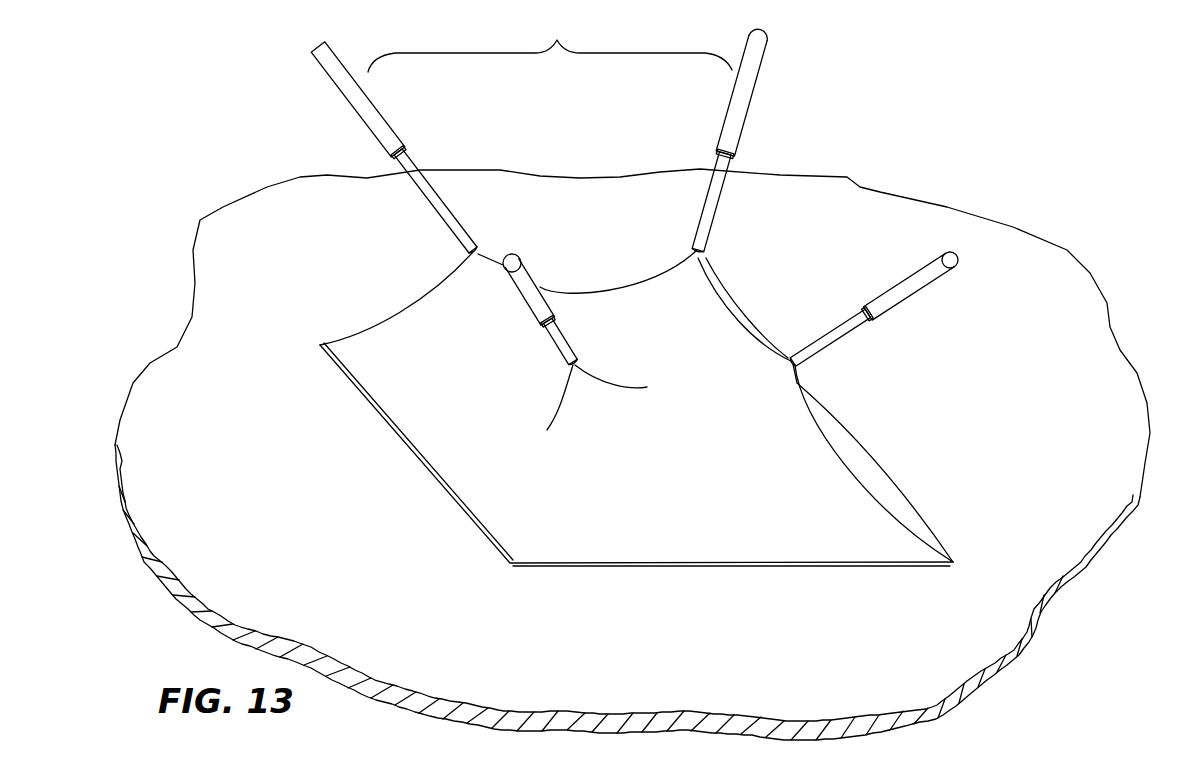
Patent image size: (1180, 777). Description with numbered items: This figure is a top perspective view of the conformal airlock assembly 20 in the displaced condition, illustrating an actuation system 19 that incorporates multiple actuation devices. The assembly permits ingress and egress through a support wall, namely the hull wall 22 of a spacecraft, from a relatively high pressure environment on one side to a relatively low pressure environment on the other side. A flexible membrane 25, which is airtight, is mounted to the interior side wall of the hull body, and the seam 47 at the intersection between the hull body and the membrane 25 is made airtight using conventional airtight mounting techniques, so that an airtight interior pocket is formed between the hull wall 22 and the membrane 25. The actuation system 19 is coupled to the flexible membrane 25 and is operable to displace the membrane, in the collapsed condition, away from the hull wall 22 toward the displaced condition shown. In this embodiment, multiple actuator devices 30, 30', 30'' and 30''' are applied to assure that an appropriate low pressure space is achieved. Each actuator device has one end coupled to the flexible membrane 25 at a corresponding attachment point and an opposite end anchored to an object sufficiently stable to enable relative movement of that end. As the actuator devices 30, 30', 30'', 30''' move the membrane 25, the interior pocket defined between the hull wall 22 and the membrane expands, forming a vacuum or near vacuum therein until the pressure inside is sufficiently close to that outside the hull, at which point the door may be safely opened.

The actuation system 19 is at (550, 42).
The conformal airlock assembly 20 is at (808, 251).
The hull wall 22 is at (137, 428).
The flexible membrane 25 is at (880, 480).
The actuator device 30 is at (378, 147).
The actuator device 30' is at (513, 309).
The actuator device 30'' is at (906, 309).
The actuator device 30''' is at (763, 140).
The seam 47 is at (529, 567).